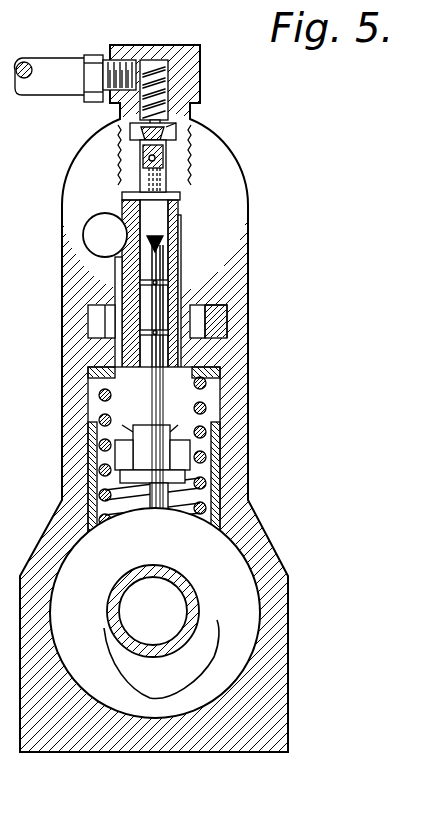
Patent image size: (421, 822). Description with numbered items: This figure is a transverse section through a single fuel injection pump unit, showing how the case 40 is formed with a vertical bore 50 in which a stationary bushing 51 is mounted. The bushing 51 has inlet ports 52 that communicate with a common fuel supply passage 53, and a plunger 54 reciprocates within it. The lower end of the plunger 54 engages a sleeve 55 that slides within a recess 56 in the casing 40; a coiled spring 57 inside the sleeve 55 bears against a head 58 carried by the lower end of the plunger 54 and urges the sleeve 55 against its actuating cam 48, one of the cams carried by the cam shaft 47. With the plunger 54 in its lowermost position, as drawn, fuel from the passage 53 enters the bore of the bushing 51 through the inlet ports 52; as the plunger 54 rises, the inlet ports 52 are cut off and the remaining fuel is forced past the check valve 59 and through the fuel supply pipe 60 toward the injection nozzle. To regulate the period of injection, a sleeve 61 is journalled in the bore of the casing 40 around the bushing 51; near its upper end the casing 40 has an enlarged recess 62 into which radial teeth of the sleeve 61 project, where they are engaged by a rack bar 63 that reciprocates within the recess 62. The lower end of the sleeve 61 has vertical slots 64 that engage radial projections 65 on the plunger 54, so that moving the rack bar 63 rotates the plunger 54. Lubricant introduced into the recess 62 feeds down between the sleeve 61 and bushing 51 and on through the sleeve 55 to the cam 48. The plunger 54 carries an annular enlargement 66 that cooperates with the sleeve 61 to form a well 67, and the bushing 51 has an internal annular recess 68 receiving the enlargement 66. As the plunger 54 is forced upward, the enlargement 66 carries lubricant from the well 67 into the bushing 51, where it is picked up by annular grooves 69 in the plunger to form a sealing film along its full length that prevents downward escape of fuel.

The case 40 is at (80, 138).
The cam shaft 47 is at (128, 640).
The cam 48 is at (212, 583).
The vertical bore 50 is at (190, 200).
The stationary bushing 51 is at (180, 268).
The inlet ports 52 is at (170, 237).
The fuel supply passage 53 is at (100, 225).
The plunger 54 is at (148, 268).
The sleeve 55 is at (212, 490).
The recess 56 is at (80, 490).
The coiled spring 57 is at (206, 390).
The head 58 is at (120, 540).
The check valve 59 is at (170, 128).
The fuel supply pipe 60 is at (62, 58).
The sleeve 61 is at (186, 350).
The enlarged recess 62 is at (224, 308).
The rack bar 63 is at (212, 326).
The vertical slots 64 is at (185, 442).
The radial projections 65 is at (186, 470).
The annular enlargement 66 is at (150, 455).
The well 67 is at (175, 420).
The internal annular recess 68 is at (135, 408).
The annular grooves 69 is at (155, 288).